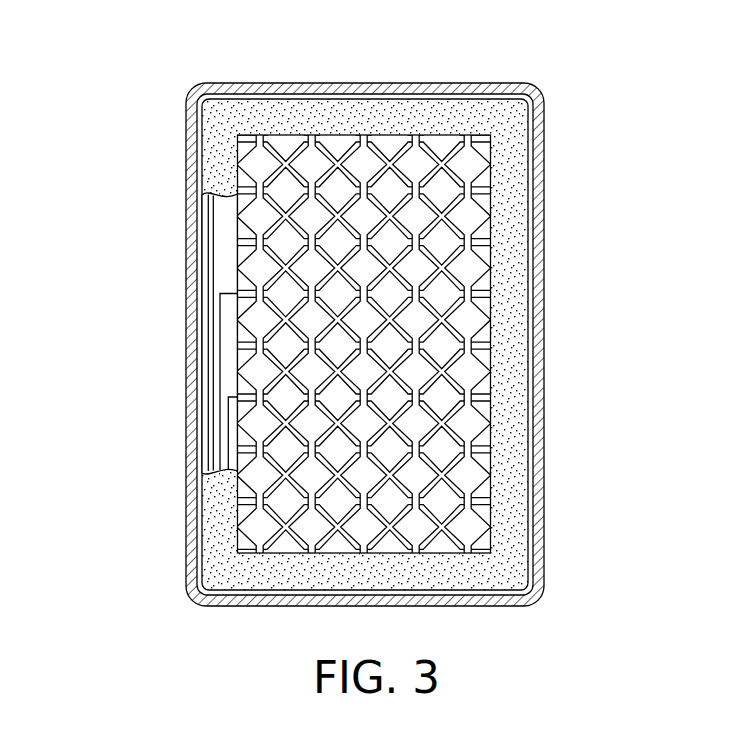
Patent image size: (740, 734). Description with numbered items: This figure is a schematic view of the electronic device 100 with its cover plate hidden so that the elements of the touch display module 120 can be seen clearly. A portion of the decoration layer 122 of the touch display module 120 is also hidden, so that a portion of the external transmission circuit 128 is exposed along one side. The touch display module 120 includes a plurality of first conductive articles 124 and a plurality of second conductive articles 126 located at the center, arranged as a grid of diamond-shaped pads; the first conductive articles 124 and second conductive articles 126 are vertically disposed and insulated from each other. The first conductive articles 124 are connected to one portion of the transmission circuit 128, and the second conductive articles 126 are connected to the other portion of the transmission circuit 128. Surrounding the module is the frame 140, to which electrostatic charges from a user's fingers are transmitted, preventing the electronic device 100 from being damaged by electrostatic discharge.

The electronic device 100 is at (368, 324).
The touch display module 120 is at (281, 319).
The decoration layer 122 is at (258, 118).
The first conductive articles 124 is at (364, 344).
The second conductive articles 126 is at (364, 346).
The transmission circuits 128 is at (212, 223).
The frame 140 is at (544, 183).